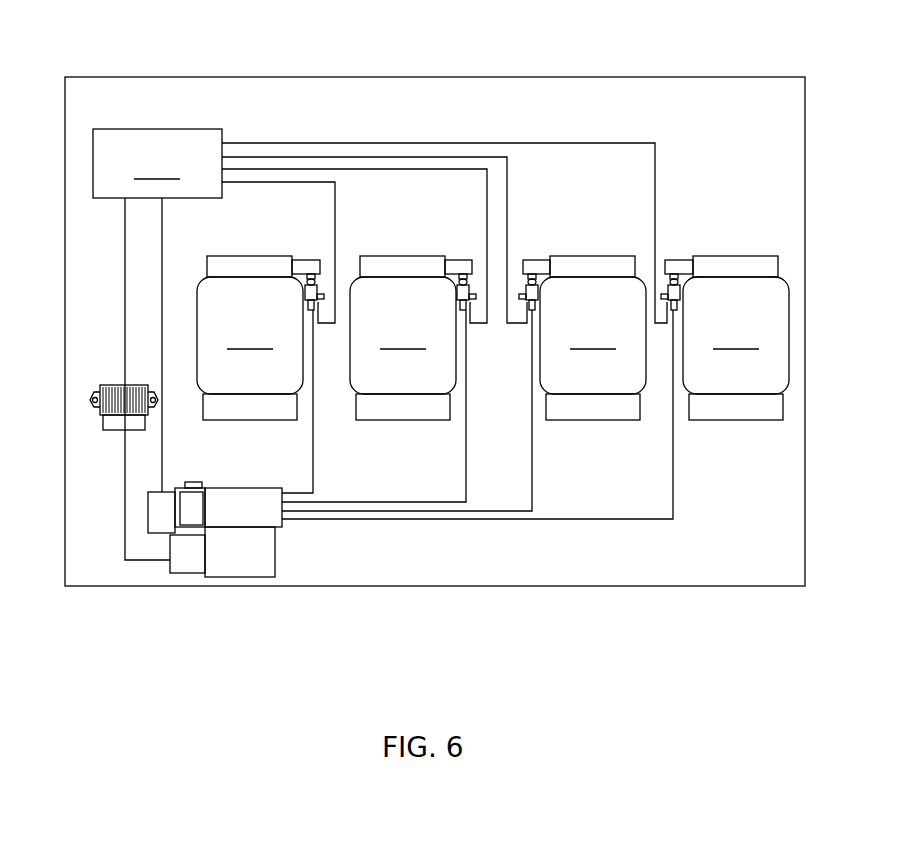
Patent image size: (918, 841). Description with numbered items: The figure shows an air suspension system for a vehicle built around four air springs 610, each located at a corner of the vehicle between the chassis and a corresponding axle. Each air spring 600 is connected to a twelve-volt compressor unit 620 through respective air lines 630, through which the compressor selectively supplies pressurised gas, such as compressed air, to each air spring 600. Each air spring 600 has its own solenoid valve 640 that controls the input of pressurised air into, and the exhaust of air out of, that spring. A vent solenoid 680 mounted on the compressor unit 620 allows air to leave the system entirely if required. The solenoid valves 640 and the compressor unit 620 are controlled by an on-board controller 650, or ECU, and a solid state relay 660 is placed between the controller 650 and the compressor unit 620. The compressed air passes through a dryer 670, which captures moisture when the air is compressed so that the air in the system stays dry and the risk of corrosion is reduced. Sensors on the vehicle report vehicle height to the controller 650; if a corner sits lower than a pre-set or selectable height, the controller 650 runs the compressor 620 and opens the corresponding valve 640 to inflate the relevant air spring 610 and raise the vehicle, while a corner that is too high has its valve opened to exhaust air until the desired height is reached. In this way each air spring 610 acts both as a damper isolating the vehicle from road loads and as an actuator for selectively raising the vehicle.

The air spring 600 is at (674, 655).
The air springs 610 is at (493, 338).
The compressor unit 620 is at (247, 562).
The air lines 630 is at (673, 478).
The solenoid valve 640 is at (678, 268).
The on-board controller 650 is at (380, 344).
The solid state relay 660 is at (113, 430).
The dryer 670 is at (283, 522).
The vent solenoid 680 is at (158, 522).